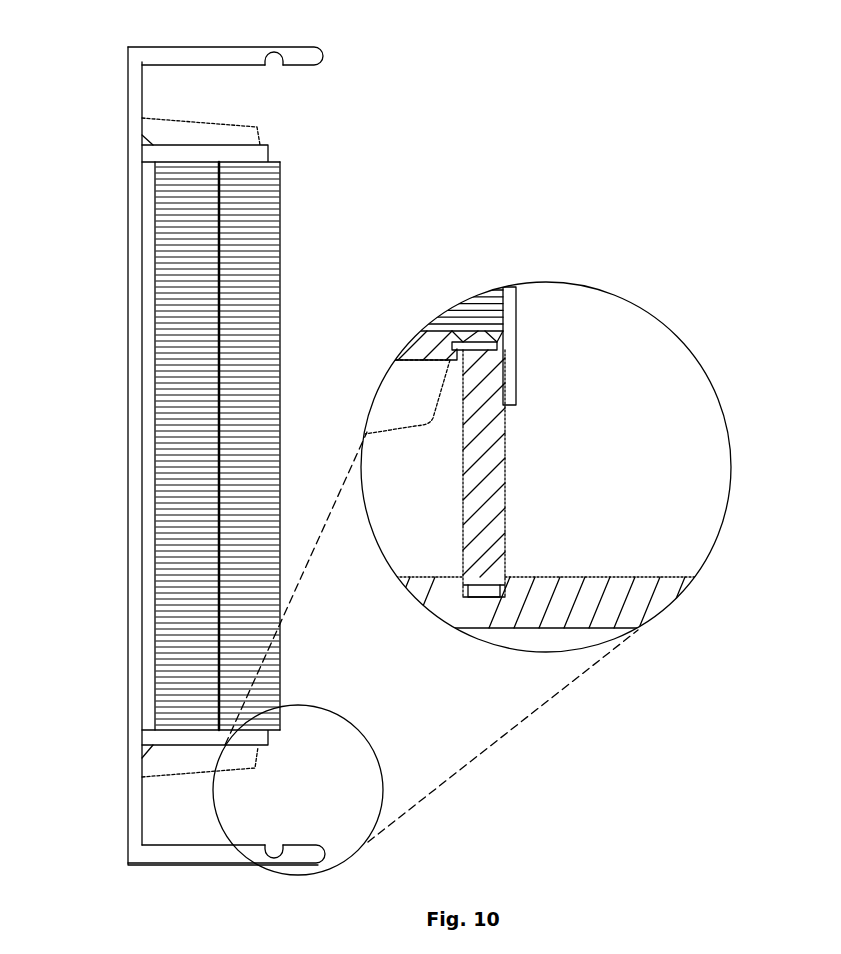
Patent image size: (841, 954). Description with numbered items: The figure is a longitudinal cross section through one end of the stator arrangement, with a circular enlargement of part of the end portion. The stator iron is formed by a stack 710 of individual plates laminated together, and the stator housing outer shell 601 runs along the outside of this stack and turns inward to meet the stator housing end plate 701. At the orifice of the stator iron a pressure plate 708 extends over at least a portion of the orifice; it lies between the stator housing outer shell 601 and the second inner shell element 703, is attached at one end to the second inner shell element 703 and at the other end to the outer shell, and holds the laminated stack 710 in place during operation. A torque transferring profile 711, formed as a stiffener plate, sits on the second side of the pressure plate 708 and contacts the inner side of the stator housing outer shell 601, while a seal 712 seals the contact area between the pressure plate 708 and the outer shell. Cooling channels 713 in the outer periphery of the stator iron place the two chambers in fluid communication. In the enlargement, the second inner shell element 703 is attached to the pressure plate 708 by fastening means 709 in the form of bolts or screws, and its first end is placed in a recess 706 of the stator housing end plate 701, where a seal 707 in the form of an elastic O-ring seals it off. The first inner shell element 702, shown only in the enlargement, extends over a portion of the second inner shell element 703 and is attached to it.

The stator housing outer shell 601 is at (134, 476).
The stator housing end plate 701 is at (318, 55).
The first inner shell element 702 is at (508, 311).
The second inner shell element 703 is at (493, 448).
The recess 706 is at (274, 74).
The seal 707 is at (478, 589).
The pressure plate 708 is at (165, 152).
The fastening means 709 is at (453, 344).
The stack 710 is at (176, 297).
The torque transferring profile 711 is at (195, 133).
The seal 712 is at (152, 136).
The cooling channel 713 is at (148, 246).